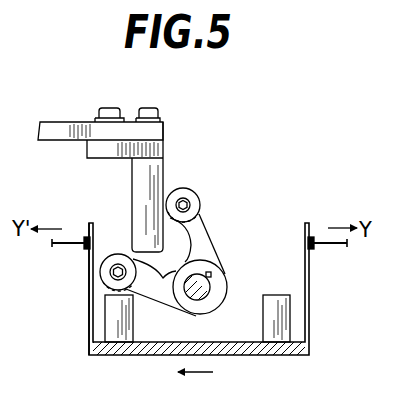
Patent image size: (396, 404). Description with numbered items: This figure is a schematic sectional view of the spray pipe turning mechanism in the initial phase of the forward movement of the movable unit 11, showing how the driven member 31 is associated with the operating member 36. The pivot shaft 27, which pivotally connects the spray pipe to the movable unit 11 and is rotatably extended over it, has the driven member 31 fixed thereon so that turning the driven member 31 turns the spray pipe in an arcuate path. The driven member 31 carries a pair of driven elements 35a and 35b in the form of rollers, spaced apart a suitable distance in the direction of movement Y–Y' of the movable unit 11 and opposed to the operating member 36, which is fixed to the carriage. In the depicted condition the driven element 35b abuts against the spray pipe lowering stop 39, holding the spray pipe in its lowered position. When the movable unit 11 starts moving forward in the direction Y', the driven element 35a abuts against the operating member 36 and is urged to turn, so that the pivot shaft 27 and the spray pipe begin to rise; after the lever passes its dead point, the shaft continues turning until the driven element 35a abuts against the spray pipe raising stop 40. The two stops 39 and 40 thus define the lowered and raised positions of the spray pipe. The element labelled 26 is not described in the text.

The movable unit 11 is at (145, 356).
The stop pin 26 is at (68, 242).
The pivot shaft 27 is at (226, 292).
The driven member 31 is at (220, 244).
The driven element 35a is at (189, 192).
The driven element 35b is at (102, 279).
The operating member 36 is at (134, 190).
The spray pipe lowering stop 39 is at (108, 326).
The spray pipe raising stop 40 is at (291, 320).